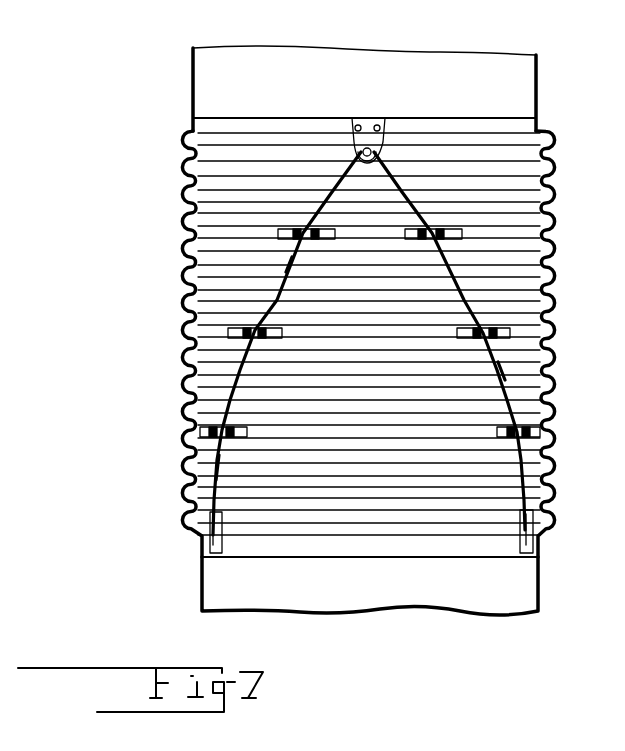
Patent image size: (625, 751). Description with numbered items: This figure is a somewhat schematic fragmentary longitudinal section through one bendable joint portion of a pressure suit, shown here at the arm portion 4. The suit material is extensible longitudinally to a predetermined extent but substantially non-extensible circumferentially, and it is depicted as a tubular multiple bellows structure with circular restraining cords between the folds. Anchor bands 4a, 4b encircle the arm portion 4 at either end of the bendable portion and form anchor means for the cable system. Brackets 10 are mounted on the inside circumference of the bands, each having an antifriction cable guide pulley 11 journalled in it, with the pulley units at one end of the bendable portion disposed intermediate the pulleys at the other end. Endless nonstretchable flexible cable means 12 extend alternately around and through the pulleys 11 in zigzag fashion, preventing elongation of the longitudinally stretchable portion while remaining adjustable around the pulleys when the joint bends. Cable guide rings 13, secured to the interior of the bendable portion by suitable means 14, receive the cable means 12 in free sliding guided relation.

The arm portion 4 is at (556, 219).
The anchor band 4a is at (530, 124).
The anchor band 4b is at (313, 558).
The bracket 10 is at (368, 117).
The cable guide pulley 11 is at (386, 170).
The cable means 12 is at (290, 262).
The cable guide ring 13 is at (242, 342).
The securing means 14 is at (447, 229).